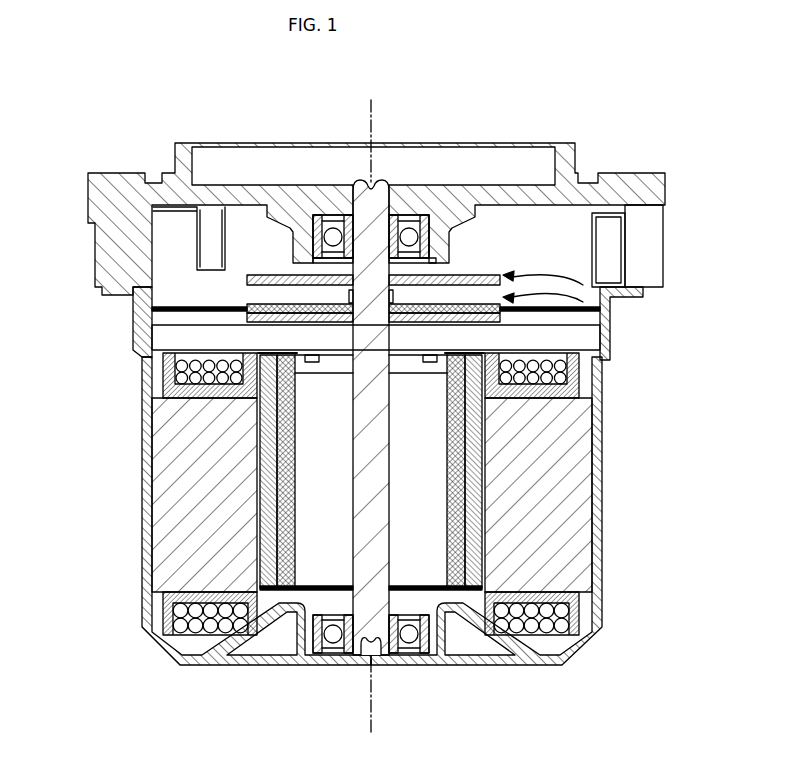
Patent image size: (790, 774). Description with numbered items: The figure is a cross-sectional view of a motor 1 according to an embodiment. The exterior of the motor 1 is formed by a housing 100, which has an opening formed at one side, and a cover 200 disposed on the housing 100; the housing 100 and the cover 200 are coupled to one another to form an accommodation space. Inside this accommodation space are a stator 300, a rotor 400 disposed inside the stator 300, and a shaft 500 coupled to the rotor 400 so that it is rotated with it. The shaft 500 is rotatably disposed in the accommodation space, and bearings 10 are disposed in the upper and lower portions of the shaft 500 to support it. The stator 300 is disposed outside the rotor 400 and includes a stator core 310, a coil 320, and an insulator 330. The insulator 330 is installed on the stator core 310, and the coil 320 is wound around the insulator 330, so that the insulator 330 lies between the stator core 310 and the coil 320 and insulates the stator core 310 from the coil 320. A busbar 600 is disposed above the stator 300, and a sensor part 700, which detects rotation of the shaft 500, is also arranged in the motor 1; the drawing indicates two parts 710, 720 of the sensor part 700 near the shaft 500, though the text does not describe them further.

The motor 1 is at (104, 77).
The bearings 10 is at (431, 213).
The housing 100 is at (136, 317).
The cover 200 is at (88, 198).
The stator 300 is at (432, 494).
The stator core 310 is at (580, 409).
The coil 320 is at (580, 368).
The insulator 330 is at (580, 388).
The rotor 400 is at (309, 420).
The shaft 500 is at (368, 492).
The busbar 600 is at (137, 357).
The sensor part 700 is at (431, 315).
The substrate 710 is at (600, 332).
The sensor plate 720 is at (600, 309).